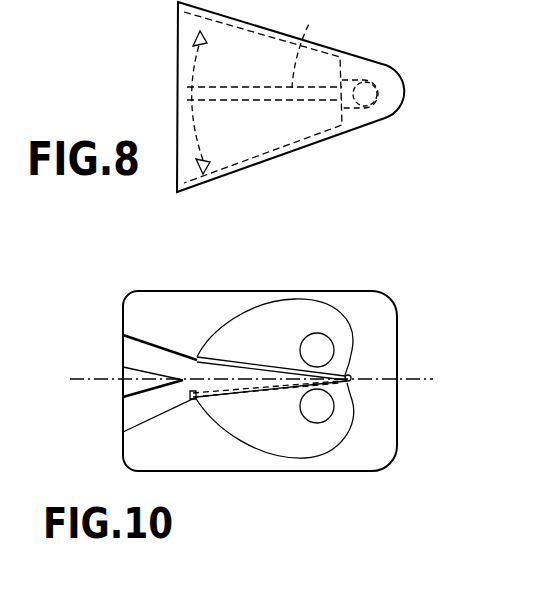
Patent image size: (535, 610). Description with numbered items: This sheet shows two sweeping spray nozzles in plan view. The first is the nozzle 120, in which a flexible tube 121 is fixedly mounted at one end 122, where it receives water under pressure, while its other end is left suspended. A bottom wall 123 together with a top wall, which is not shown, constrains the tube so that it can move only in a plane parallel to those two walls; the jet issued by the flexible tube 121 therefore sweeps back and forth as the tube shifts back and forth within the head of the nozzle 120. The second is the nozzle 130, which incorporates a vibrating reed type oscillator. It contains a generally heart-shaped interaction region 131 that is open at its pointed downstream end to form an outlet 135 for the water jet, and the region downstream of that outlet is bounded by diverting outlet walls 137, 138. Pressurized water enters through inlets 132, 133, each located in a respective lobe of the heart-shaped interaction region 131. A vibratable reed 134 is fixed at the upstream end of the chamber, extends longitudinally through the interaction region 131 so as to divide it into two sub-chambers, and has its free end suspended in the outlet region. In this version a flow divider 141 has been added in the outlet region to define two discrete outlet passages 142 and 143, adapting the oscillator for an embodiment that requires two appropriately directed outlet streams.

In FIG. 8, the nozzle 120 is at (370, 120).
In FIG. 8, the flexible tube 121 is at (267, 50).
In FIG. 8, the end 122 is at (335, 90).
In FIG. 8, the bottom wall 123 is at (187, 50).
In FIG. 10, the nozzle 130 is at (250, 458).
In FIG. 10, the interaction region 131 is at (243, 382).
In FIG. 10, the inlet 132 is at (308, 418).
In FIG. 10, the inlet 133 is at (328, 343).
In FIG. 10, the vibratable reed 134 is at (243, 362).
In FIG. 10, the outlet 135 is at (193, 396).
In FIG. 10, the diverting outlet wall 137 is at (123, 335).
In FIG. 10, the diverting outlet wall 138 is at (130, 425).
In FIG. 10, the flow divider 141 is at (130, 375).
In FIG. 10, the outlet passage 142 is at (130, 405).
In FIG. 10, the outlet passage 143 is at (130, 350).